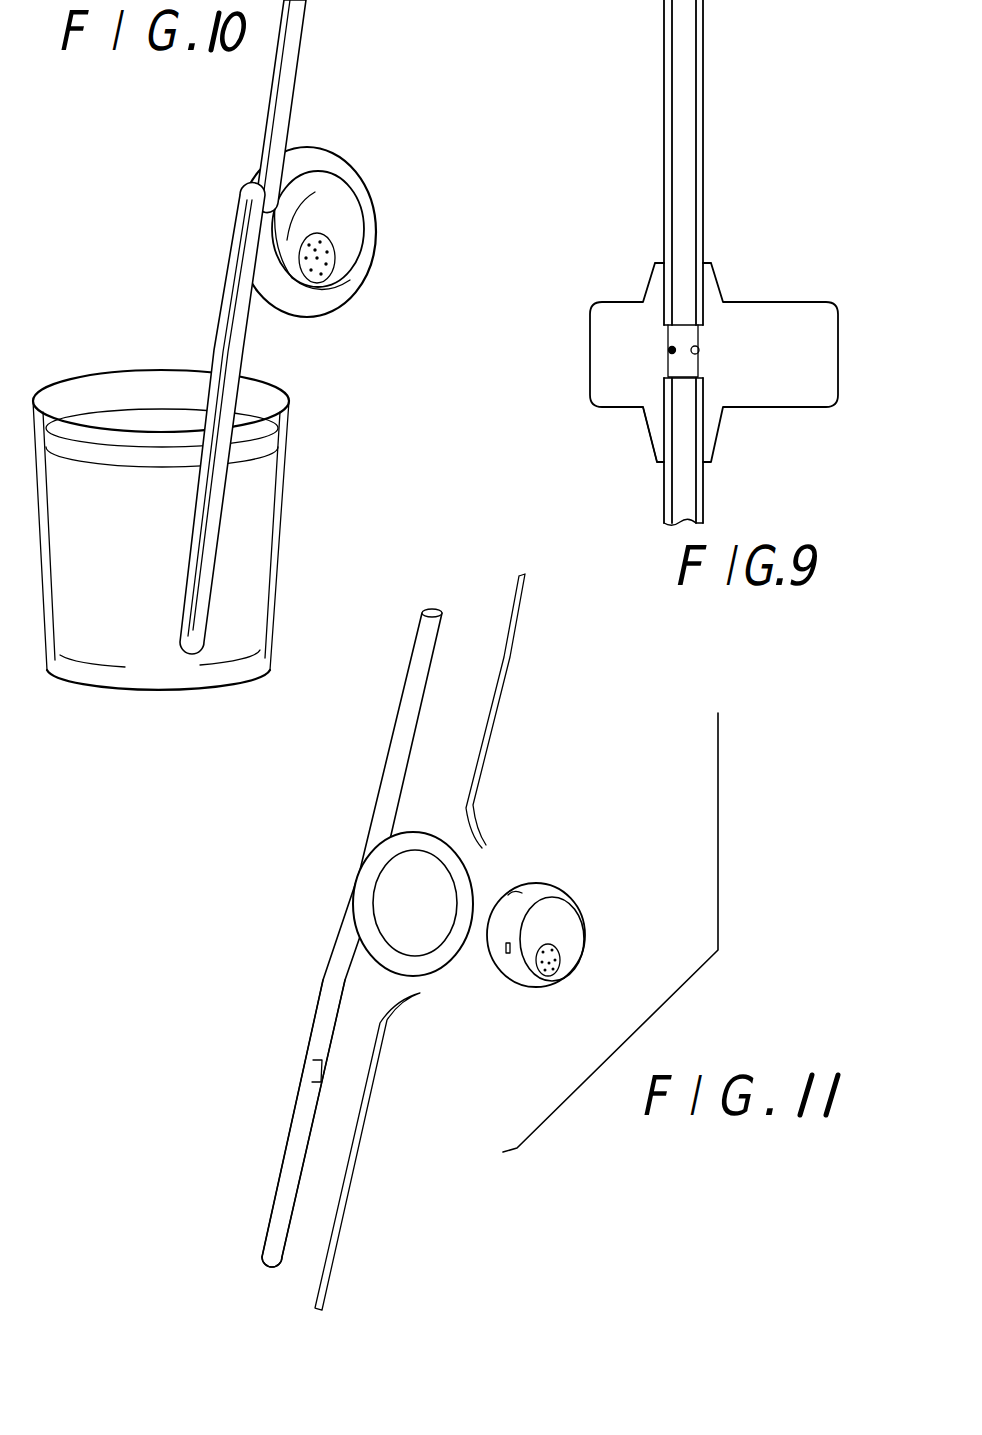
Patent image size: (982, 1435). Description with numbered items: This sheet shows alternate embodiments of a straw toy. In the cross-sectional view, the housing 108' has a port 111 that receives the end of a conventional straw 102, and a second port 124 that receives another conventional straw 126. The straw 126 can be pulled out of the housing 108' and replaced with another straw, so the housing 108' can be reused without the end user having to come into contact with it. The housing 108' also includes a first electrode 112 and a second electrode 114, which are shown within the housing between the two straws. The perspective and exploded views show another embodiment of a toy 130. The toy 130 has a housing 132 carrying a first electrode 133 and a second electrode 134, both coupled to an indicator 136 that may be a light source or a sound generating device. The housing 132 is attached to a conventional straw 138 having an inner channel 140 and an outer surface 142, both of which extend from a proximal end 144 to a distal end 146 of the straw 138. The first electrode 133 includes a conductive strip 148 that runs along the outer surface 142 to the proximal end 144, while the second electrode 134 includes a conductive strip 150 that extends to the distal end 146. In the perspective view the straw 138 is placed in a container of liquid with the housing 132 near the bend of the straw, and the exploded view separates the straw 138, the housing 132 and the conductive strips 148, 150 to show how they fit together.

In FIG. 9, the straw 102 is at (687, 497).
In FIG. 9, the housing 108' is at (749, 362).
In FIG. 9, the port 111 is at (661, 463).
In FIG. 9, the first electrode 112 is at (667, 352).
In FIG. 9, the second electrode 114 is at (699, 352).
In FIG. 9, the second port 124 is at (706, 262).
In FIG. 9, the straw 126 is at (690, 62).
In FIG. 10, the toy 130 is at (386, 196).
In FIG. 11, the toy 130 is at (590, 840).
In FIG. 11, the housing 132 is at (577, 932).
In FIG. 11, the first electrode 133 is at (510, 890).
In FIG. 11, the second electrode 134 is at (504, 958).
In FIG. 11, the indicator 136 is at (557, 970).
In FIG. 11, the straw 138 is at (400, 740).
In FIG. 11, the inner channel 140 is at (313, 1067).
In FIG. 11, the outer surface 142 is at (295, 1112).
In FIG. 11, the proximal end 144 is at (410, 620).
In FIG. 11, the distal end 146 is at (258, 1265).
In FIG. 10, the conductive strip 148 is at (290, 72).
In FIG. 11, the conductive strip 148 is at (507, 657).
In FIG. 10, the conductive strip 150 is at (238, 362).
In FIG. 11, the conductive strip 150 is at (365, 1105).